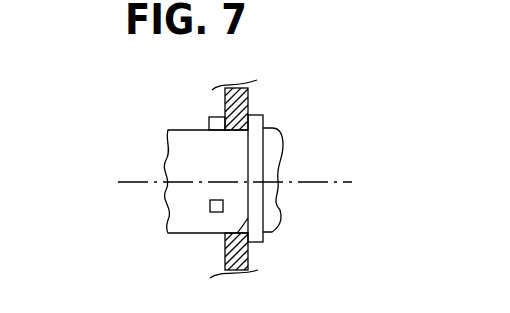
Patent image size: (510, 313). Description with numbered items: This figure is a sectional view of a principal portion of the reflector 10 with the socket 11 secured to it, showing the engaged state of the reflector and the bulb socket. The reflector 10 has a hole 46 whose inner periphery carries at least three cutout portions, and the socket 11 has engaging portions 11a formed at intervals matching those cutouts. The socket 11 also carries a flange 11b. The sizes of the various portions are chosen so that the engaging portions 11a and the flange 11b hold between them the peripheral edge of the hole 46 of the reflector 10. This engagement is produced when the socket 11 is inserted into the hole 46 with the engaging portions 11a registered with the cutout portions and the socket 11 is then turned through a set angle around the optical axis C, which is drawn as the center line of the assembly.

The socket 11 is at (180, 148).
The engaging portions 11a is at (210, 117).
The flange 11b is at (263, 114).
The reflector 10 is at (250, 255).
The hole 46 is at (248, 218).
The optical axis C is at (307, 181).